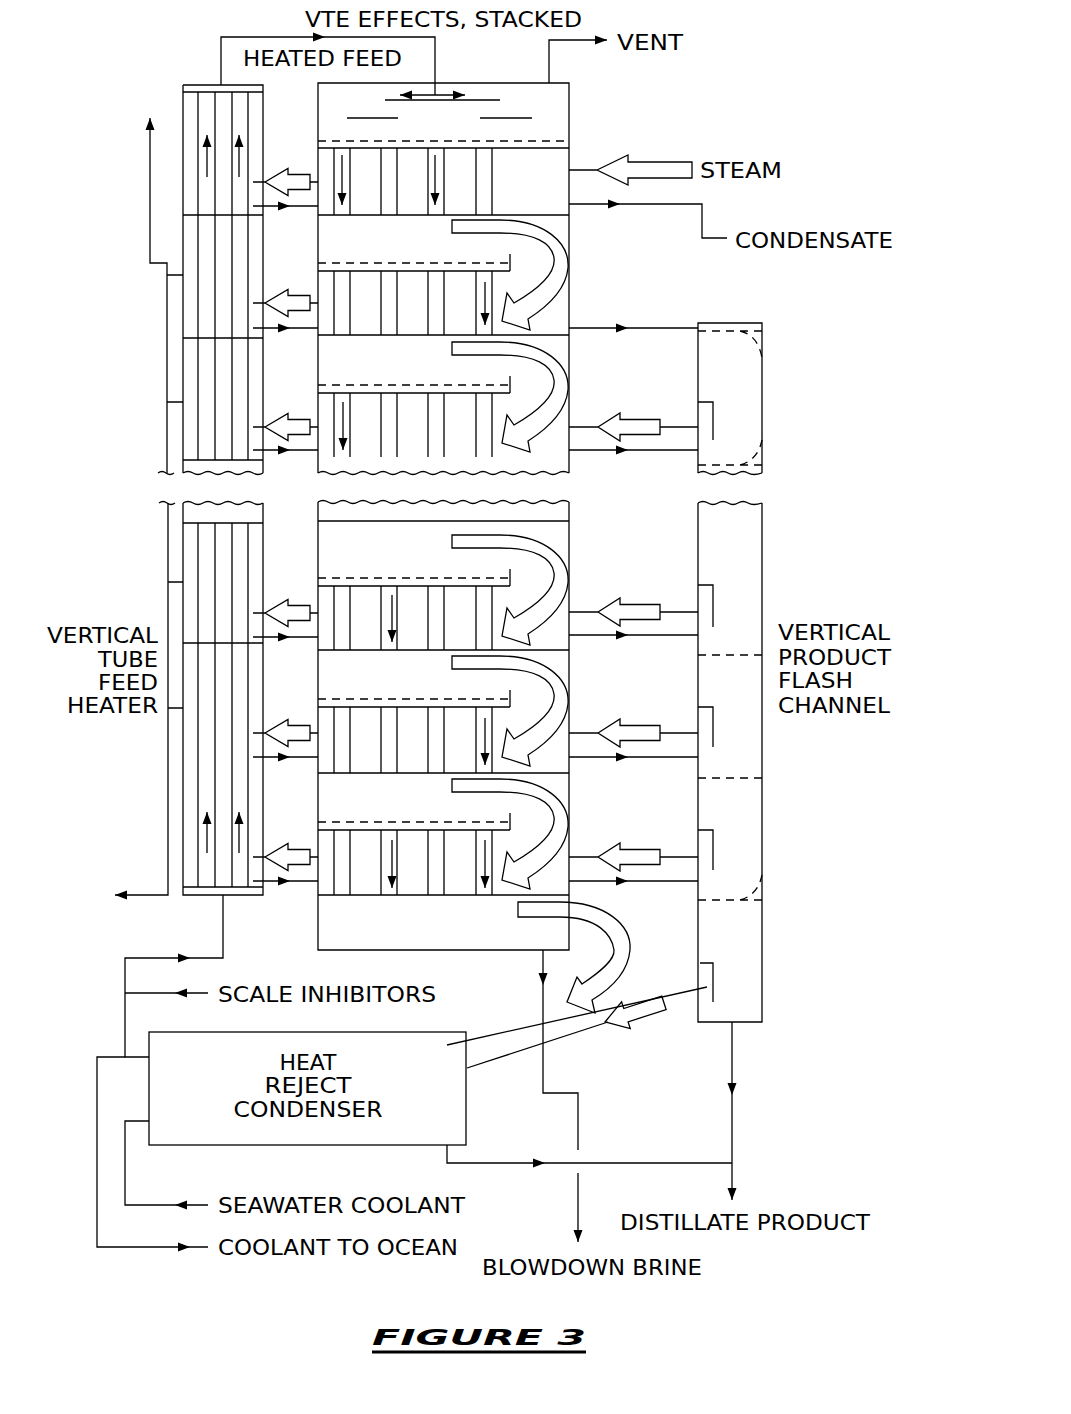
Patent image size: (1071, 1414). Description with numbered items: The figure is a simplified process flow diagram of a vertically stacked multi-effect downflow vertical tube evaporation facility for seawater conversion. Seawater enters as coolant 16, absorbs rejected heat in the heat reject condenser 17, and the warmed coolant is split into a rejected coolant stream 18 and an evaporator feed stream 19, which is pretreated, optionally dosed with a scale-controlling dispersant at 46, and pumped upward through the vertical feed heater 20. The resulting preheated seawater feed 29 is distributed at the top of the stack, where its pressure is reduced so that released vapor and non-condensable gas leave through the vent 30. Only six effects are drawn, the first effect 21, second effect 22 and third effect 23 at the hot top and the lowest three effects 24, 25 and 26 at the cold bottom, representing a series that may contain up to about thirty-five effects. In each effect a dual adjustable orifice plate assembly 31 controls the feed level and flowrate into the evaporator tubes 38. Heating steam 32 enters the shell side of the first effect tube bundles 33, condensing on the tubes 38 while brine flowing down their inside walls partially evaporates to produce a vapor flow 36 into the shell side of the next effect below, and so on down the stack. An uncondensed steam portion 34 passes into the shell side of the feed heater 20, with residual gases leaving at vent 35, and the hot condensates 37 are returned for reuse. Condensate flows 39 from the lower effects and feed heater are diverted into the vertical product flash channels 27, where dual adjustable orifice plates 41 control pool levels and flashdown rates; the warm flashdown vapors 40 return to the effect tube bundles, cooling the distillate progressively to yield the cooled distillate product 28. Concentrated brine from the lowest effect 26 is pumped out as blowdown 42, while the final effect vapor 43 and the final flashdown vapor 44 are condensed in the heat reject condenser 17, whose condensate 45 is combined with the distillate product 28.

The coolant 16 is at (190, 1205).
The heat reject condenser 17 is at (322, 1138).
The rejected coolant stream 18 is at (188, 1255).
The evaporator feed stream 19 is at (220, 956).
The vertical feed heater 20 is at (197, 390).
The first effect 21 is at (570, 125).
The second effect 22 is at (570, 292).
The third effect 23 is at (570, 410).
The fourth effect 24 is at (570, 596).
The fifth effect 25 is at (570, 718).
The lowest effect 26 is at (570, 840).
The vertical product flash channel 27 is at (762, 410).
The cooled distillate product 28 is at (734, 1180).
The preheated seawater feed 29 is at (440, 93).
The vent 30 is at (566, 48).
The dual adjustable orifice plates 31 is at (415, 141).
The heating steam 32 is at (660, 160).
The tube bundles 33 is at (493, 205).
The uncondensed steam portion 34 is at (305, 170).
The vent 35 is at (148, 138).
The vapor flow 36 is at (575, 255).
The hot condensates 37 is at (308, 214).
The evaporator tubes 38 is at (342, 208).
The condensate flows 39 is at (645, 326).
The flashdown vapors 40 is at (635, 412).
The dual adjustable orifice plates 41 is at (764, 363).
The blowdown 42 is at (543, 995).
The final effect vapor 43 is at (630, 962).
The final flashdown vapor 44 is at (645, 1018).
The condenser condensate 45 is at (558, 1163).
The dispersant dosing point 46 is at (208, 993).